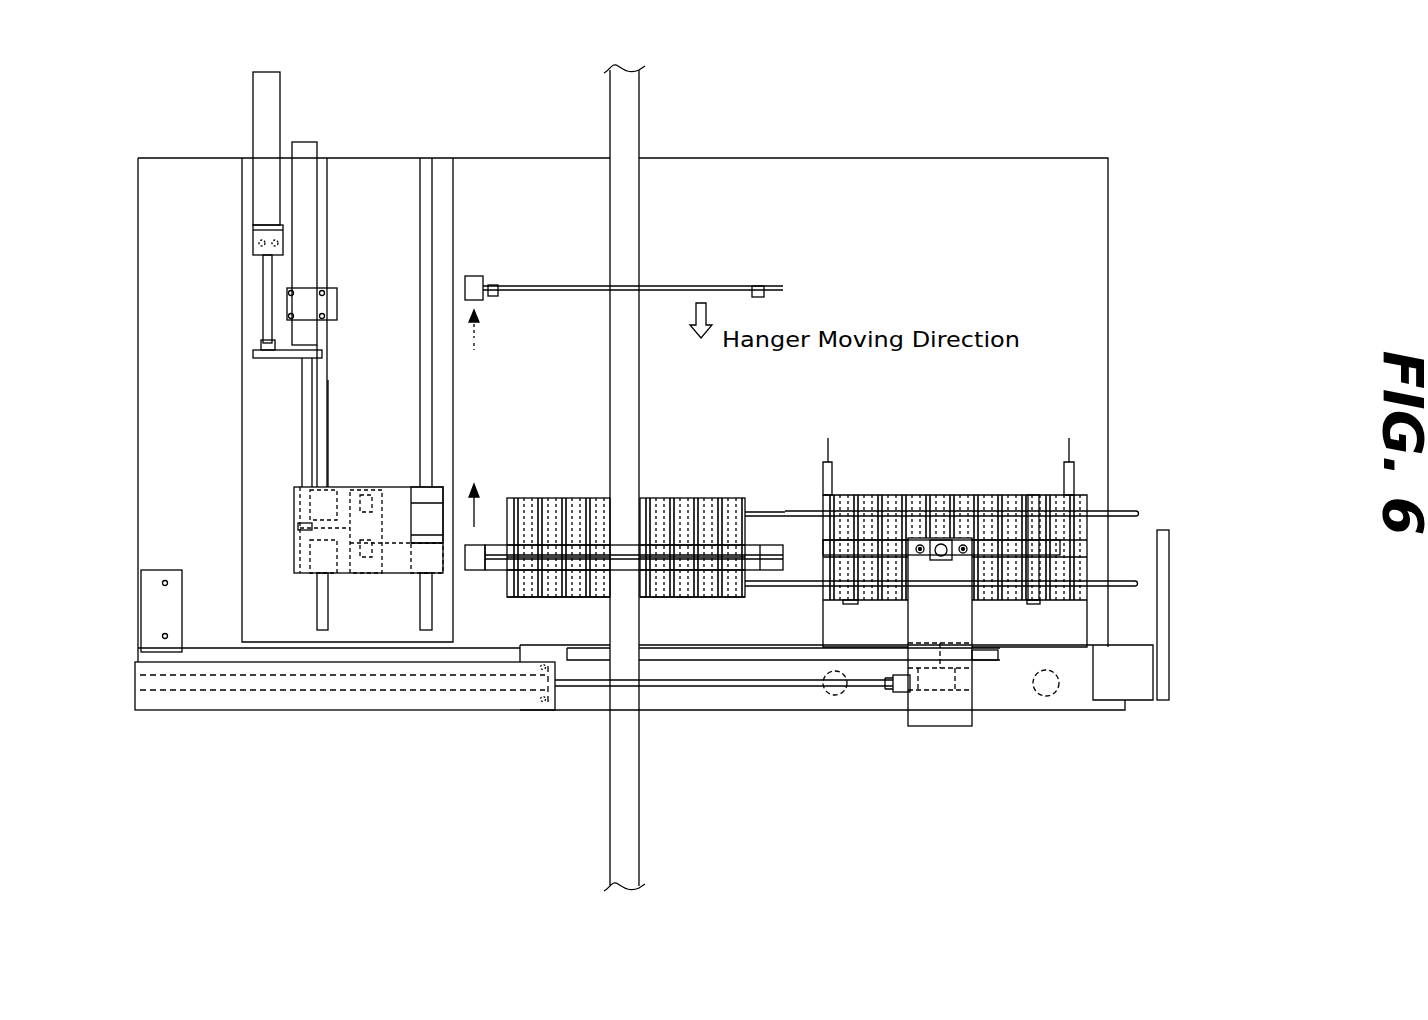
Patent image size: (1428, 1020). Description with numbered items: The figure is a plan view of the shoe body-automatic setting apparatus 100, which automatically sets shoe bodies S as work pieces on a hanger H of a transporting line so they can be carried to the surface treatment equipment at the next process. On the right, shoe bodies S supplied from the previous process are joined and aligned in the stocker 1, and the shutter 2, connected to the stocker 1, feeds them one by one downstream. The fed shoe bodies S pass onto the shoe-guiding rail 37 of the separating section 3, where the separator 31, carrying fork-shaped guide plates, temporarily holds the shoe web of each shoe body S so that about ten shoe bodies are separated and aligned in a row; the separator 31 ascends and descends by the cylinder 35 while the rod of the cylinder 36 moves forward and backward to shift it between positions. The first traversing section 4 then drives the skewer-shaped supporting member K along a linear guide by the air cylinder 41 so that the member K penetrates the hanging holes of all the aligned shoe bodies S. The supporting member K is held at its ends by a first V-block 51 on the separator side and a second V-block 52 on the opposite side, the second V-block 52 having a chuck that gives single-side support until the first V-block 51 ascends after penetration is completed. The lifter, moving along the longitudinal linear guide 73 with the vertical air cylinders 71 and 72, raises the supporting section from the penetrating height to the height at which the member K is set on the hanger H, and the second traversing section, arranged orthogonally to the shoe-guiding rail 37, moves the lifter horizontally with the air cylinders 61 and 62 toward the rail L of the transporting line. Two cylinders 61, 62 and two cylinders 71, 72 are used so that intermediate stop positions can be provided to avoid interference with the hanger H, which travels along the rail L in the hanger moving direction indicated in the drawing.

The shoe body-automatic setting apparatus 100 is at (700, 725).
The stocker 1 is at (1146, 513).
The shutter 2 is at (1117, 503).
The separating section 3 is at (978, 484).
The first traversing section 4 is at (585, 692).
The separator 31 is at (1027, 543).
The cylinder 35 is at (963, 544).
The cylinder 36 is at (941, 693).
The shoe-guiding rail 37 is at (773, 510).
The air cylinder 41 is at (395, 686).
The first V-block 51 is at (775, 572).
The second V-block 52 is at (473, 276).
The air cylinder 61 is at (253, 107).
The air cylinder 62 is at (320, 251).
The vertical air cylinder 71 is at (427, 513).
The vertical air cylinder 72 is at (425, 557).
The longitudinal linear guide 73 is at (372, 567).
The rail L is at (610, 107).
The skewer-shaped supporting member K is at (675, 286).
The hanger H is at (757, 286).
The shoe body S is at (517, 497).